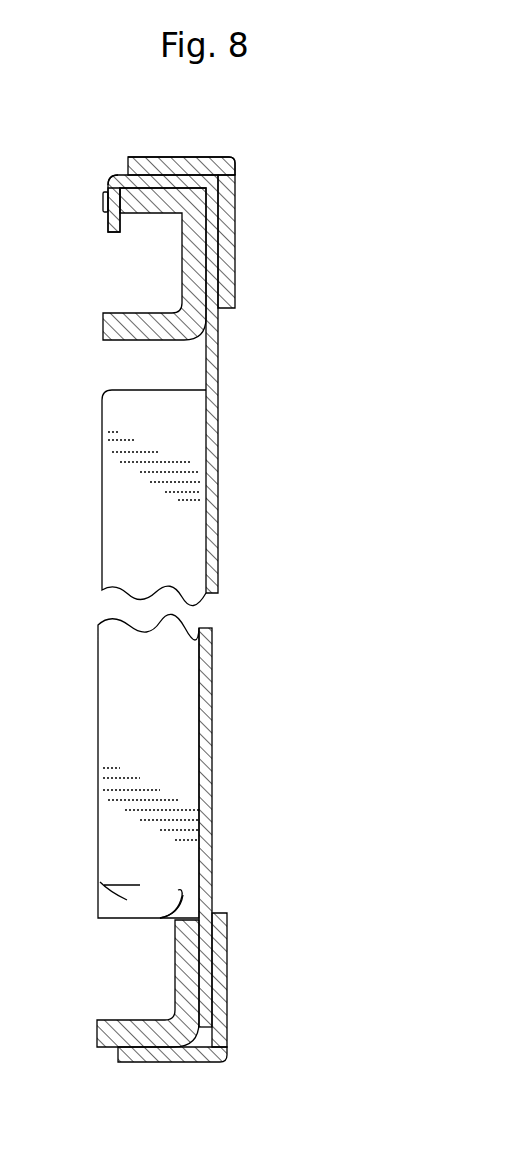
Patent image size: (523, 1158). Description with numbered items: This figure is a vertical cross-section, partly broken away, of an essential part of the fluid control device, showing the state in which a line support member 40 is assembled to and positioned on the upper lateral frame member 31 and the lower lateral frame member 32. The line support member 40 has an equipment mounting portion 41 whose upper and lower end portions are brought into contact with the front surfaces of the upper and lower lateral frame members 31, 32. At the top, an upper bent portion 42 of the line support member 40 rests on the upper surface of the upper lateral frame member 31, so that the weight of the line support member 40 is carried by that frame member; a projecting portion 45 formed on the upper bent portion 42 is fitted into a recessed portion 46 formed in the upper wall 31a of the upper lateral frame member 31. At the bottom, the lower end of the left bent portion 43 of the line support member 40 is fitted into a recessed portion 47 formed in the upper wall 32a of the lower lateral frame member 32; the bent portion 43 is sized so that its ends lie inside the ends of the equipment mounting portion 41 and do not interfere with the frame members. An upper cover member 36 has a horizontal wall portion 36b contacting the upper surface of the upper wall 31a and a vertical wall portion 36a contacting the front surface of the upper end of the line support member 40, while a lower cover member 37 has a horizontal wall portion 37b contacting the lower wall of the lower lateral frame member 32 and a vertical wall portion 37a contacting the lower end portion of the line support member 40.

The upper lateral frame member 31 is at (193, 268).
The upper wall 31a is at (125, 182).
The lower lateral frame member 32 is at (190, 980).
The upper wall 32a is at (97, 878).
The upper cover member 36 is at (226, 208).
The vertical wall portion 36a is at (228, 237).
The horizontal wall portion 36b is at (193, 158).
The lower cover member 37 is at (198, 1021).
The vertical wall portion 37a is at (217, 1023).
The horizontal wall portion 37b is at (135, 1065).
The line support member 40 is at (217, 517).
The equipment mounting portion 41 is at (155, 353).
The upper bent portion 42 is at (173, 157).
The left bent portion 43 is at (100, 799).
The projecting portion 45 is at (110, 228).
The recessed portion 46 is at (107, 203).
The recessed portion 47 is at (177, 907).